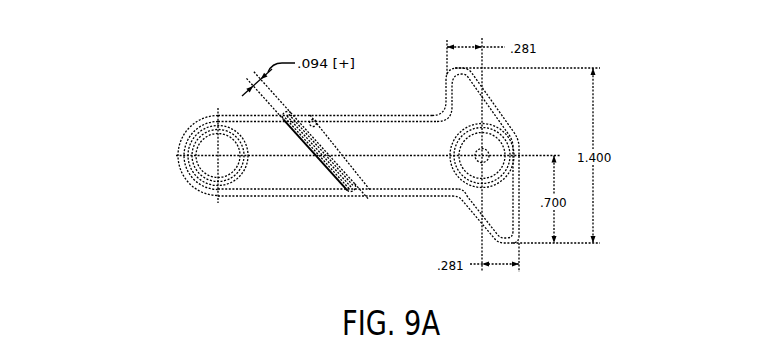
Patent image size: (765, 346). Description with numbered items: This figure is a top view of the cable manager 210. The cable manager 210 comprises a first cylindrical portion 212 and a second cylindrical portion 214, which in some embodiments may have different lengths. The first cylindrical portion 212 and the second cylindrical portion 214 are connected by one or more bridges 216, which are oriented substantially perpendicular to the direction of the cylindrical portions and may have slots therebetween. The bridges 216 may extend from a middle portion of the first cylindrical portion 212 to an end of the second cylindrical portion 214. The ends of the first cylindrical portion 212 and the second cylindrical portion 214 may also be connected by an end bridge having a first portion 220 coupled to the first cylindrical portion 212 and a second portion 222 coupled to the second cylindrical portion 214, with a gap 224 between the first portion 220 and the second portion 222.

The cable manager 210 is at (137, 77).
The first cylindrical portion 212 is at (512, 143).
The second cylindrical portion 214 is at (186, 153).
The bridges 216 is at (320, 128).
The first portion 220 is at (357, 132).
The second portion 222 is at (272, 180).
The gap 224 is at (318, 137).